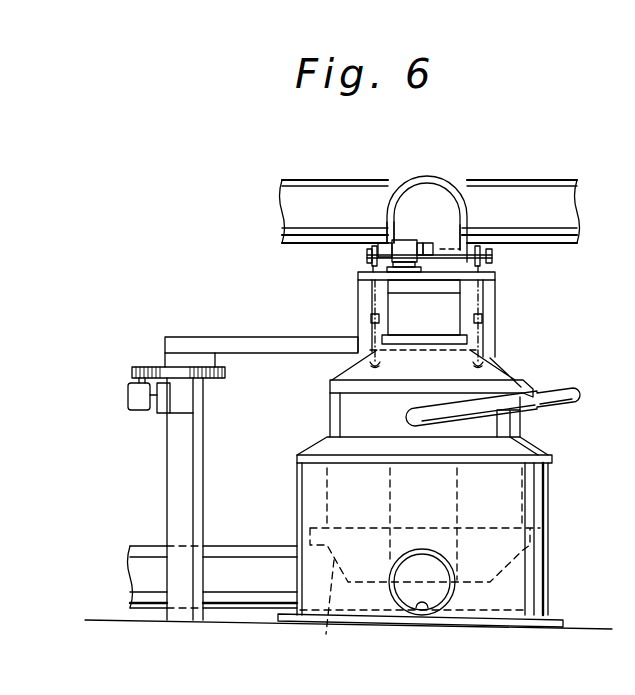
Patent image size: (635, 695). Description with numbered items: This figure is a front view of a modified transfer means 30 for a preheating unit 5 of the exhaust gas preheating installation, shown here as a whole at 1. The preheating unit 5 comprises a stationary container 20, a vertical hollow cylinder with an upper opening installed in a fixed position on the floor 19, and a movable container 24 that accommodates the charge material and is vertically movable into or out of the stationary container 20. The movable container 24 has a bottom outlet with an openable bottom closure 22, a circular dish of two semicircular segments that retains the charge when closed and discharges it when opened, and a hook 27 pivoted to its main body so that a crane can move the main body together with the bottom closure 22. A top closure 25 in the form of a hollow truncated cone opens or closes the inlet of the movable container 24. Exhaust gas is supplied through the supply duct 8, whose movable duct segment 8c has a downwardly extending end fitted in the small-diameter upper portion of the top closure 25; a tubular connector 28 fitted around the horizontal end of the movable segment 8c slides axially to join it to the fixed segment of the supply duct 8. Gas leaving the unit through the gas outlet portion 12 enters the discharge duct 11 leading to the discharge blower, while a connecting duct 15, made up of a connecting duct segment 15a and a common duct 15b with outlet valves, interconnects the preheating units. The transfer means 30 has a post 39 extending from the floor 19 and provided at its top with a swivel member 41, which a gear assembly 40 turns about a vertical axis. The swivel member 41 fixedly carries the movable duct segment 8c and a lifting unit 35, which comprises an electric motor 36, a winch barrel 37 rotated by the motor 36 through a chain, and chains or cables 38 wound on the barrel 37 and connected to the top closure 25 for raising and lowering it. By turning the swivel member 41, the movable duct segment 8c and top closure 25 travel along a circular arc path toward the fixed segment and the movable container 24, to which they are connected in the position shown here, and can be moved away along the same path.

The apparatus 1 is at (190, 240).
The preheating unit 5 is at (551, 524).
The supply duct 8 is at (432, 196).
The movable duct segment 8c is at (463, 212).
The discharge duct 11 is at (448, 600).
The gas outlet portion 12 is at (416, 610).
The connecting duct 15 is at (226, 546).
The connecting duct segment 15a is at (462, 508).
The common duct 15b is at (262, 544).
The floor 19 is at (574, 623).
The stationary container 20 is at (546, 562).
The bottom closure 22 is at (318, 611).
The movable container 24 is at (525, 425).
The top closure 25 is at (500, 372).
The hook 27 is at (566, 392).
The tubular connector 28 is at (422, 177).
The transfer means 30 is at (495, 324).
The lifting unit 35 is at (388, 246).
The electric motor 36 is at (402, 226).
The winch barrel 37 is at (468, 256).
The chains or cables 38 is at (372, 306).
The post 39 is at (167, 474).
The gear assembly 40 is at (132, 368).
The swivel member 41 is at (284, 340).